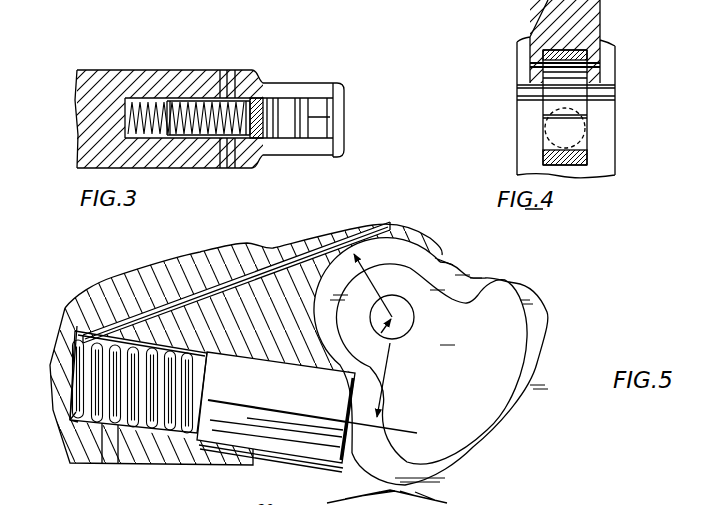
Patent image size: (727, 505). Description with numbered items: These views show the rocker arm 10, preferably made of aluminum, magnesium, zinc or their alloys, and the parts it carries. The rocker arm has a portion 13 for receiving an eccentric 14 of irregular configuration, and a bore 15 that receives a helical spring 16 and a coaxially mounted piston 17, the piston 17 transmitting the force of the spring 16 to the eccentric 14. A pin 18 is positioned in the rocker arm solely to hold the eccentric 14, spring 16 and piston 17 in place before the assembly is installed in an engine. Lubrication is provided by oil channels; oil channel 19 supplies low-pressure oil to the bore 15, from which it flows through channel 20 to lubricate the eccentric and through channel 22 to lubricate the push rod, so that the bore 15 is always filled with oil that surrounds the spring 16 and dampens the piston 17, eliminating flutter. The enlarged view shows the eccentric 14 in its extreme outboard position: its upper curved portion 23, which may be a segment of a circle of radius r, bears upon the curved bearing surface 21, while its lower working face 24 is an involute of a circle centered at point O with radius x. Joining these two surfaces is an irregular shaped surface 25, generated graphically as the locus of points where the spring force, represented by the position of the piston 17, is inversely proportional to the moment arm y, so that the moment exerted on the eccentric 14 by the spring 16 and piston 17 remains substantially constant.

In FIG. 3, the rocker arm 10 is at (156, 67).
In FIG. 4, the rocker arm 10 is at (601, 26).
In FIG. 5, the rocker arm 10 is at (166, 268).
In FIG. 3, the portion for receiving the eccentric 13 is at (340, 90).
In FIG. 4, the portion for receiving the eccentric 13 is at (530, 84).
In FIG. 3, the eccentric 14 is at (257, 99).
In FIG. 4, the eccentric 14 is at (590, 108).
In FIG. 3, the bore 15 is at (160, 130).
In FIG. 5, the bore 15 is at (85, 424).
In FIG. 3, the helical spring 16 is at (195, 136).
In FIG. 5, the helical spring 16 is at (80, 330).
In FIG. 3, the piston 17 is at (246, 140).
In FIG. 5, the piston 17 is at (283, 445).
In FIG. 3, the pin 18 is at (299, 99).
In FIG. 4, the pin 18 is at (600, 65).
In FIG. 5, the oil channel 19 is at (106, 457).
In FIG. 4, the oil channel 20 is at (560, 50).
In FIG. 5, the oil channel 20 is at (277, 266).
In FIG. 4, the curved bearing surface 21 is at (601, 56).
In FIG. 5, the curved bearing surface 21 is at (438, 258).
In FIG. 5, the oil channel 22 is at (83, 422).
In FIG. 5, the upper curved portion 23 is at (437, 270).
In FIG. 5, the working face 24 is at (526, 337).
In FIG. 5, the irregular shaped surface 25 is at (346, 455).